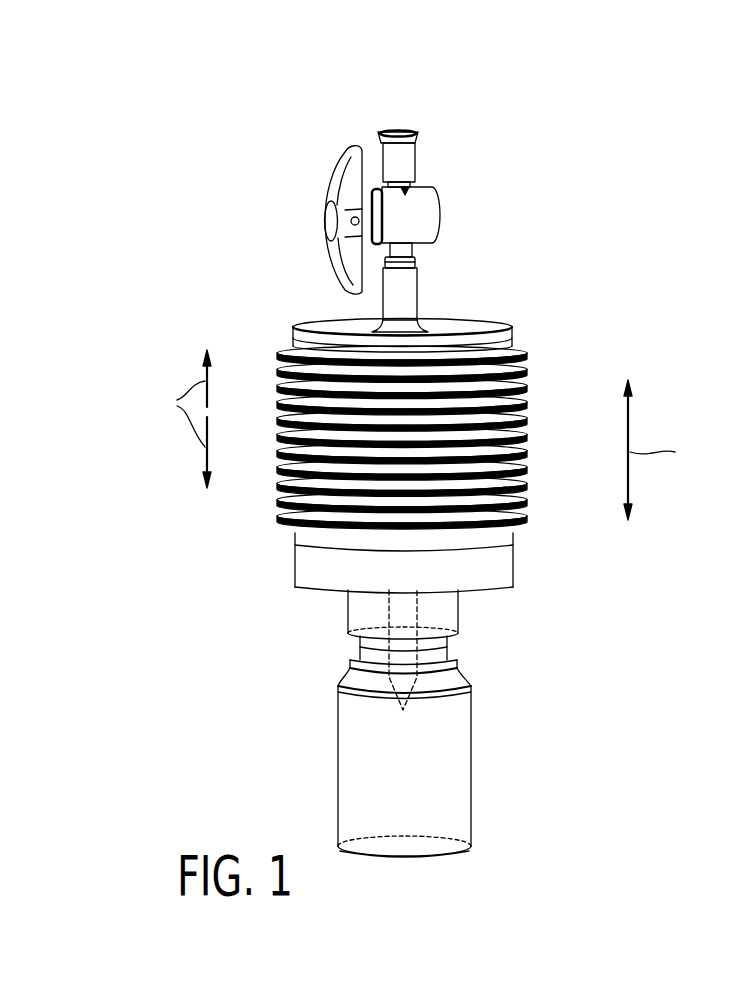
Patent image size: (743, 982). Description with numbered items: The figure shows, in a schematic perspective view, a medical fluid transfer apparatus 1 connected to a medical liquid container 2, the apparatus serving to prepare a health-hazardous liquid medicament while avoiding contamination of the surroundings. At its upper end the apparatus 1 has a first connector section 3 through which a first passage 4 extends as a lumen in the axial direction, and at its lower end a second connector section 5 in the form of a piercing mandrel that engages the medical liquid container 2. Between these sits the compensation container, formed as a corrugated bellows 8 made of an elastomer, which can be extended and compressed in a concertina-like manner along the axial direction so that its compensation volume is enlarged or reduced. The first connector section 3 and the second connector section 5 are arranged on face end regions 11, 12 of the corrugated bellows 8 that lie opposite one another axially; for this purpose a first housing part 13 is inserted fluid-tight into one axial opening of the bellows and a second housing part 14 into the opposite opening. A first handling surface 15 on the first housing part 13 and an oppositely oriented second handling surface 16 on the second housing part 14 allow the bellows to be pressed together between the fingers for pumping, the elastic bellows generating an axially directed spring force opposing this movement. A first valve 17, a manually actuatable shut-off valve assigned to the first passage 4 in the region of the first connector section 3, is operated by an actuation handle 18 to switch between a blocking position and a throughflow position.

The medical fluid transfer apparatus 1 is at (522, 152).
The medical liquid container 2 is at (497, 728).
The first connector section 3 is at (413, 153).
The first passage 4 is at (393, 132).
The second connector section 5 is at (400, 651).
The corrugated bellows 8 is at (258, 356).
The face end region 11 is at (528, 330).
The face end region 12 is at (530, 551).
The first housing part 13 is at (470, 325).
The second housing part 14 is at (497, 580).
The first handling surface 15 is at (326, 322).
The second handling surface 16 is at (312, 598).
The first valve 17 is at (460, 204).
The actuation handle 18 is at (334, 180).